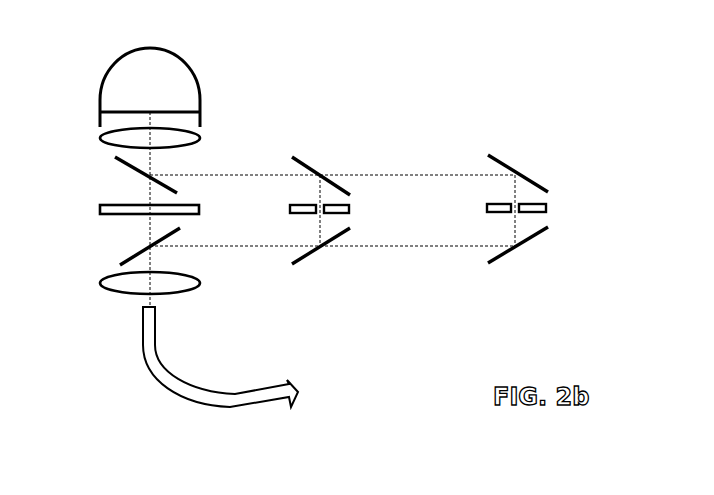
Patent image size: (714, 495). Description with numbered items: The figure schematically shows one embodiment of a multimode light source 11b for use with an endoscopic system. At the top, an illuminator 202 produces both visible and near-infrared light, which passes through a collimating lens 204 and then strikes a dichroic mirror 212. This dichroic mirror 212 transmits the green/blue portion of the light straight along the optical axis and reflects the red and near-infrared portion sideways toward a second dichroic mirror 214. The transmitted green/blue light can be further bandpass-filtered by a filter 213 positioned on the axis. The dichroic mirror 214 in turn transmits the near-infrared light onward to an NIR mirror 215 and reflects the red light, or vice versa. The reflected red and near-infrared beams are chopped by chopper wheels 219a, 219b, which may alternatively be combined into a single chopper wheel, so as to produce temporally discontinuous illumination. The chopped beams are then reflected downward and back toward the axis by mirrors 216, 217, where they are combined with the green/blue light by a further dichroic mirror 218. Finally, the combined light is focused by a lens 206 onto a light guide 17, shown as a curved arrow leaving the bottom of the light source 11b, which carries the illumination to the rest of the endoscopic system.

The illuminator 202 is at (197, 88).
The collimating lens 204 is at (197, 138).
The dichroic mirror 212 is at (132, 169).
The filter 213 is at (100, 212).
The dichroic mirror 218 is at (127, 257).
The lens 206 is at (198, 283).
The dichroic mirror 214 is at (312, 168).
The chopper wheel 219a is at (348, 202).
The mirror 216 is at (305, 258).
The NIR mirror 215 is at (502, 152).
The chopper wheel 219b is at (545, 202).
The mirror 217 is at (502, 258).
The light guide 17 is at (177, 372).
The light source 11b is at (363, 348).